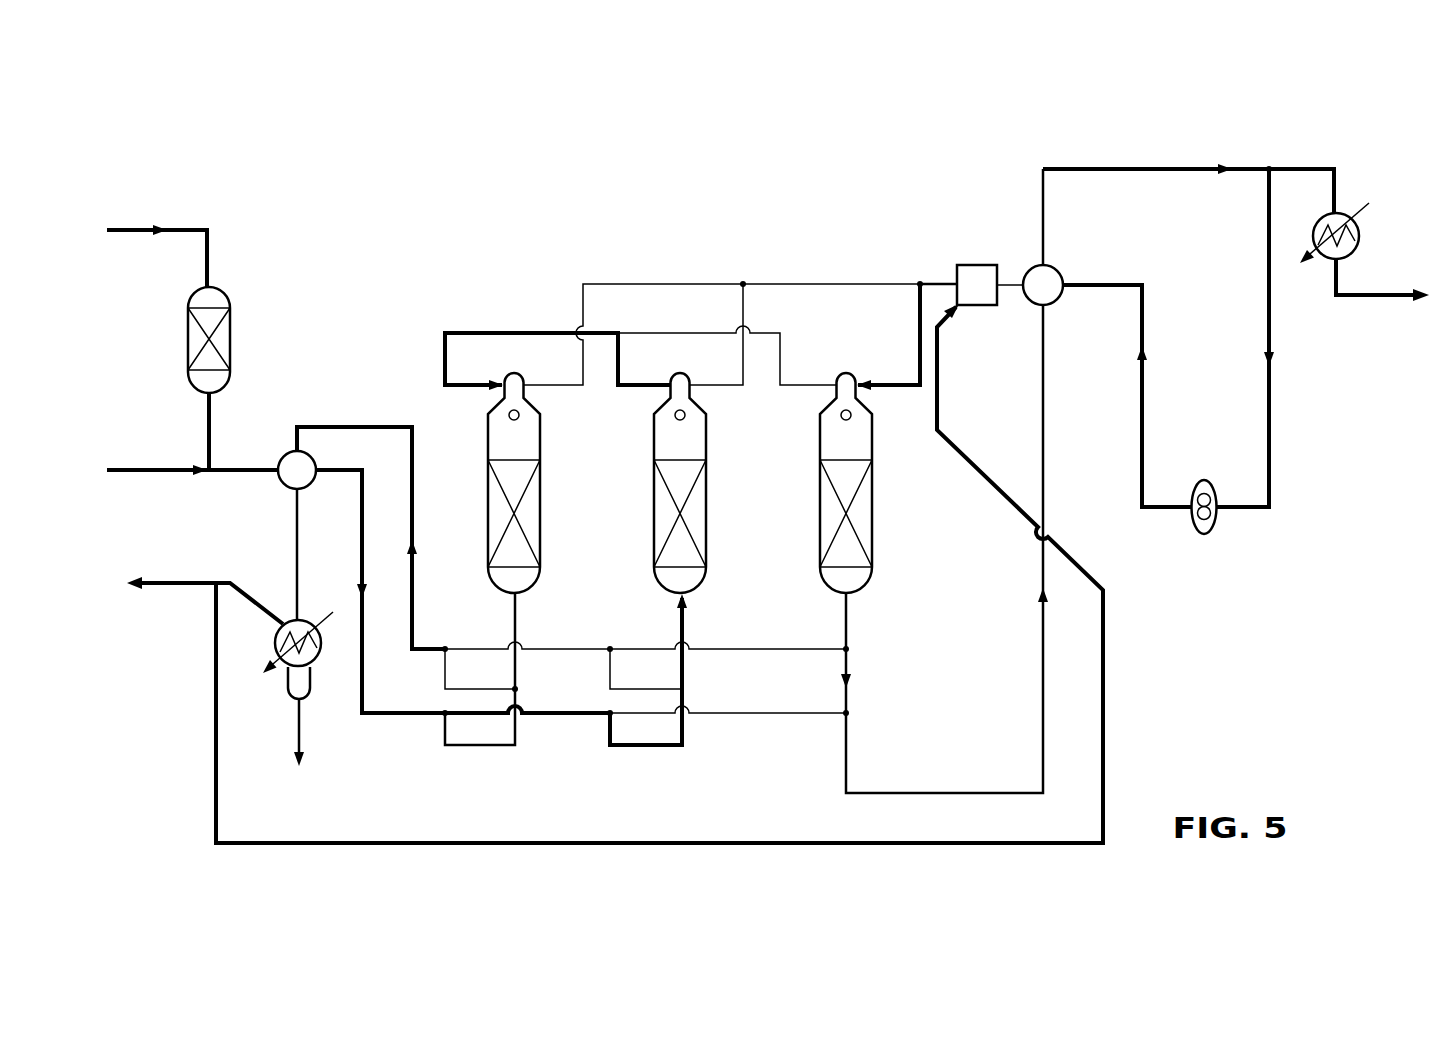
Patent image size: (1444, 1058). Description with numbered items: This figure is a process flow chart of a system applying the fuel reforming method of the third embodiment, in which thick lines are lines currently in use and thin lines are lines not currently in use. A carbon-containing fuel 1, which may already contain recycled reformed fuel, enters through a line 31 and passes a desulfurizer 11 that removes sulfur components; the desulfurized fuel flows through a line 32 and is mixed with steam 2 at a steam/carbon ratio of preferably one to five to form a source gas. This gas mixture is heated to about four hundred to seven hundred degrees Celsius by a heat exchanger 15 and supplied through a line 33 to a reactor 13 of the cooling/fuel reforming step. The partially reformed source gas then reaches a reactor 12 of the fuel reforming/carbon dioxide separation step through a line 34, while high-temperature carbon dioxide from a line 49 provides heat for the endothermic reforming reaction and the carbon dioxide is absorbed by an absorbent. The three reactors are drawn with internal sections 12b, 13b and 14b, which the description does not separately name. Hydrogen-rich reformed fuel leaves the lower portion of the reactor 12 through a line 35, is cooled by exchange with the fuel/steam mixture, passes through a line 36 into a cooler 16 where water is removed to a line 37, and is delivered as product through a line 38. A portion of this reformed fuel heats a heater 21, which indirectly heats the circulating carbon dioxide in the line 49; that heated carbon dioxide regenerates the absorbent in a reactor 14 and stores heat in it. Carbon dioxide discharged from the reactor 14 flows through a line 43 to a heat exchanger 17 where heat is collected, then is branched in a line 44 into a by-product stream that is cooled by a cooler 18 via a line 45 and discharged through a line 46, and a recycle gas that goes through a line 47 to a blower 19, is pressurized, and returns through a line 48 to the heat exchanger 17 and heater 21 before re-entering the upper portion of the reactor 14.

The carbon-containing fuel 1 is at (146, 251).
The steam 2 is at (182, 471).
The desulfurizer 11 is at (188, 342).
The reactor 12 is at (510, 483).
The catalyst bed of first reactor 12b is at (492, 512).
The reactor 13 is at (712, 483).
The catalyst bed of second reactor 13b is at (707, 504).
The reactor 14 is at (879, 483).
The catalyst bed of third reactor 14b is at (873, 504).
The heat exchanger 15 is at (277, 482).
The cooler 16 is at (287, 690).
The heat exchanger 17 is at (1062, 272).
The cooler 18 is at (1359, 245).
The blower 19 is at (1205, 535).
The heater 21 is at (977, 265).
The line 31 is at (129, 228).
The line 32 is at (208, 437).
The line 33 is at (690, 622).
The line 34 is at (633, 388).
The line 35 is at (517, 612).
The line 36 is at (295, 557).
The line 37 is at (301, 731).
The line 38 is at (192, 588).
The line 43 is at (948, 790).
The line 44 is at (1180, 168).
The line 45 is at (1300, 168).
The line 46 is at (1372, 300).
The line 47 is at (1271, 420).
The line 48 is at (1142, 423).
The line 49 is at (937, 282).